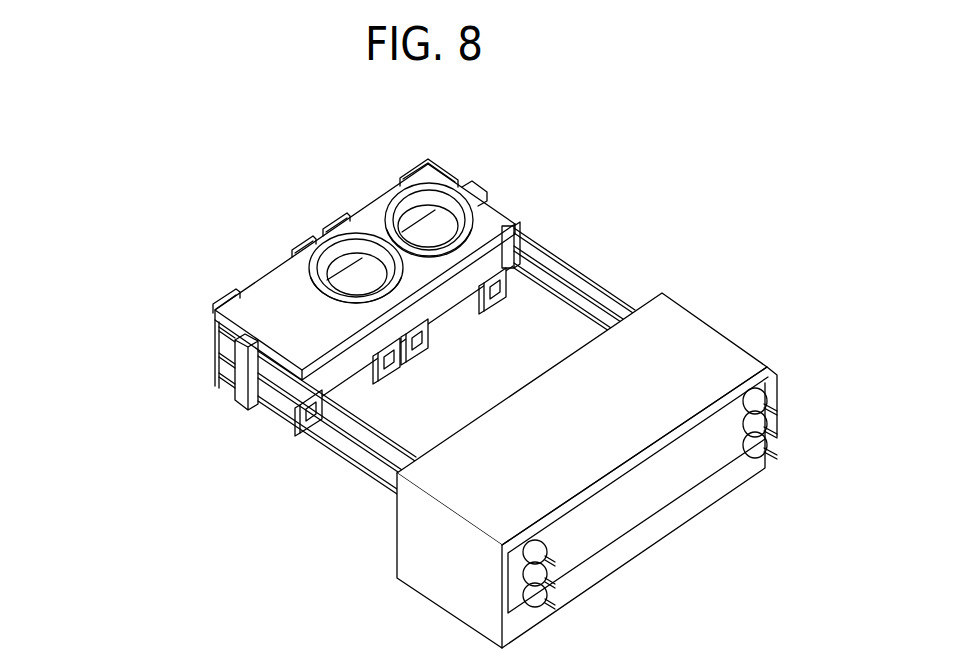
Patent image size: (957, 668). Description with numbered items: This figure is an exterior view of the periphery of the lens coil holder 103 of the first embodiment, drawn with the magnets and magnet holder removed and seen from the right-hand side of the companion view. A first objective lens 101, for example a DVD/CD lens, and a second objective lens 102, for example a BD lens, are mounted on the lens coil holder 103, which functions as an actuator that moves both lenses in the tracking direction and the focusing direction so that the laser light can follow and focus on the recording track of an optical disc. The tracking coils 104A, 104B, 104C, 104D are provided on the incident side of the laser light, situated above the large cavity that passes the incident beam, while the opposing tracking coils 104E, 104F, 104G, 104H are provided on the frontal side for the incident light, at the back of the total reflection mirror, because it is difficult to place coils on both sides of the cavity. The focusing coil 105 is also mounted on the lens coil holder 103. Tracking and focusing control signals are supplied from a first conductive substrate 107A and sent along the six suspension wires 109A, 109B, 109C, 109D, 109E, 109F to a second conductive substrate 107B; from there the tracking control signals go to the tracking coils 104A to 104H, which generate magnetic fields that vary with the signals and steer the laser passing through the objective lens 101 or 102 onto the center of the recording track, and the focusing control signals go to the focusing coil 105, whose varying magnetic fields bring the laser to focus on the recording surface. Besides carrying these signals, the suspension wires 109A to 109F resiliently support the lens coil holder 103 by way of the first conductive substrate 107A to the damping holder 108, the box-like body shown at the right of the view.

The first objective lens 101 is at (450, 207).
The second objective lens 102 is at (361, 248).
The lens coil holder 103 is at (266, 293).
The tracking coil 104A is at (418, 175).
The tracking coil 104B is at (330, 226).
The tracking coil 104C is at (298, 246).
The tracking coil 104D is at (218, 303).
The tracking coil 104E is at (348, 412).
The tracking coil 104F is at (398, 378).
The tracking coil 104G is at (427, 357).
The tracking coil 104H is at (500, 305).
The focusing coil 105 is at (503, 225).
The first conductive substrate 107A is at (660, 493).
The second conductive substrate 107B is at (218, 367).
The damping holder 108 is at (440, 588).
The suspension wire 109A is at (388, 460).
The suspension wire 109B is at (361, 457).
The suspension wire 109C is at (325, 449).
The suspension wire 109D is at (537, 283).
The suspension wire 109E is at (577, 290).
The suspension wire 109F is at (623, 303).